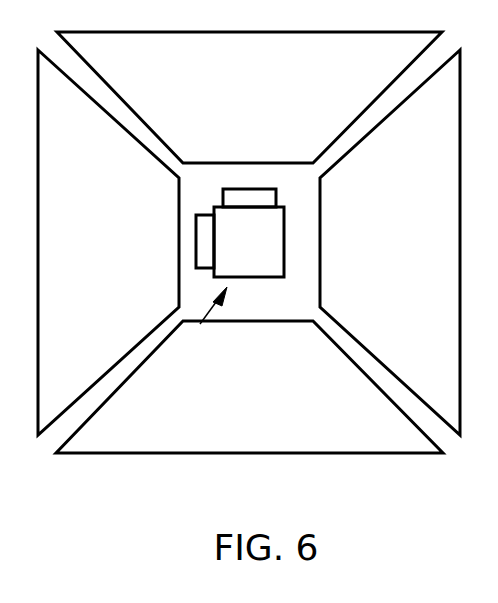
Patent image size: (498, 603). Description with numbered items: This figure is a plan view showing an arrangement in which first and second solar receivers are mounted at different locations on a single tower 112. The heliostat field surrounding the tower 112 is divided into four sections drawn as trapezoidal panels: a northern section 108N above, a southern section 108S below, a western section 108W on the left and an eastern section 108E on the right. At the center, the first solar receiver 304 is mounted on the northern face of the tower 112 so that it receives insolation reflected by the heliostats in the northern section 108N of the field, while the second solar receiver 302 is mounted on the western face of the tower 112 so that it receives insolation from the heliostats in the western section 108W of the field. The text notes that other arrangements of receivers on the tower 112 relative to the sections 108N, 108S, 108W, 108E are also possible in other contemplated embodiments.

The northern section of the field 108N is at (227, 108).
The southern section of the field 108S is at (228, 396).
The western section of the field 108W is at (82, 251).
The eastern section of the field 108E is at (368, 251).
The second solar receiver 302 is at (205, 237).
The first solar receiver 304 is at (250, 198).
The tower 112 is at (200, 324).